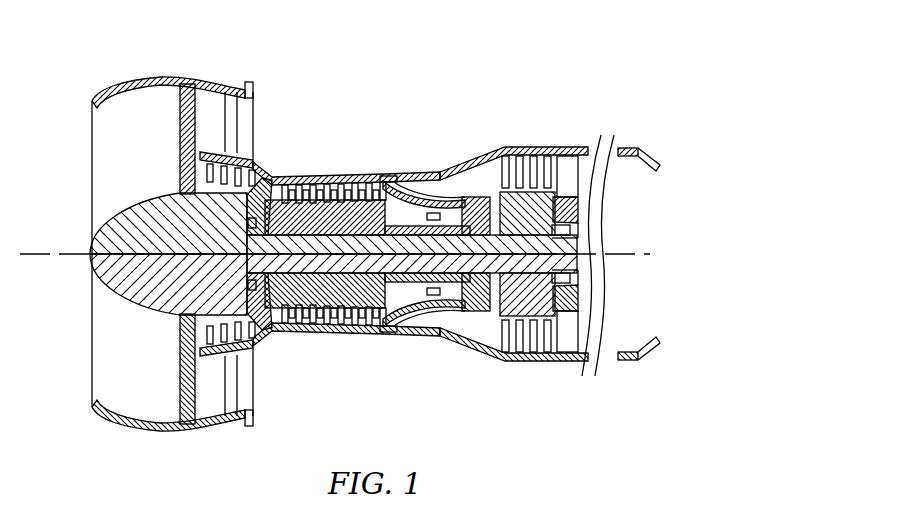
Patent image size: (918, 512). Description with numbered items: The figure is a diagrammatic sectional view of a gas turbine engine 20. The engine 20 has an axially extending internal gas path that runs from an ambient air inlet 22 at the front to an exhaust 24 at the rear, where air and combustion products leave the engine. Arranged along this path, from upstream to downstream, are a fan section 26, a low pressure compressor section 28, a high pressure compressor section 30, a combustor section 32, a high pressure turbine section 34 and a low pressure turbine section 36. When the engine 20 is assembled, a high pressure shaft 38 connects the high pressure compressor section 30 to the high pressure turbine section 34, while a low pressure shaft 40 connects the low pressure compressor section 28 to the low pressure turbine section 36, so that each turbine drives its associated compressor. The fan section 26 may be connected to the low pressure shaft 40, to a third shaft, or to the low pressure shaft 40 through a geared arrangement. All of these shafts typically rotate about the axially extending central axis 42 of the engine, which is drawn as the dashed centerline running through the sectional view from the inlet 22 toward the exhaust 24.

The gas turbine engine 20 is at (510, 68).
The ambient air inlet 22 is at (92, 352).
The exhaust 24 is at (655, 283).
The fan section 26 is at (190, 397).
The low pressure compressor section 28 is at (250, 160).
The high pressure compressor section 30 is at (333, 197).
The combustor section 32 is at (437, 188).
The high pressure turbine section 34 is at (482, 185).
The low pressure turbine section 36 is at (537, 148).
The high pressure shaft 38 is at (407, 322).
The low pressure shaft 40 is at (466, 262).
The central axis 42 is at (50, 253).